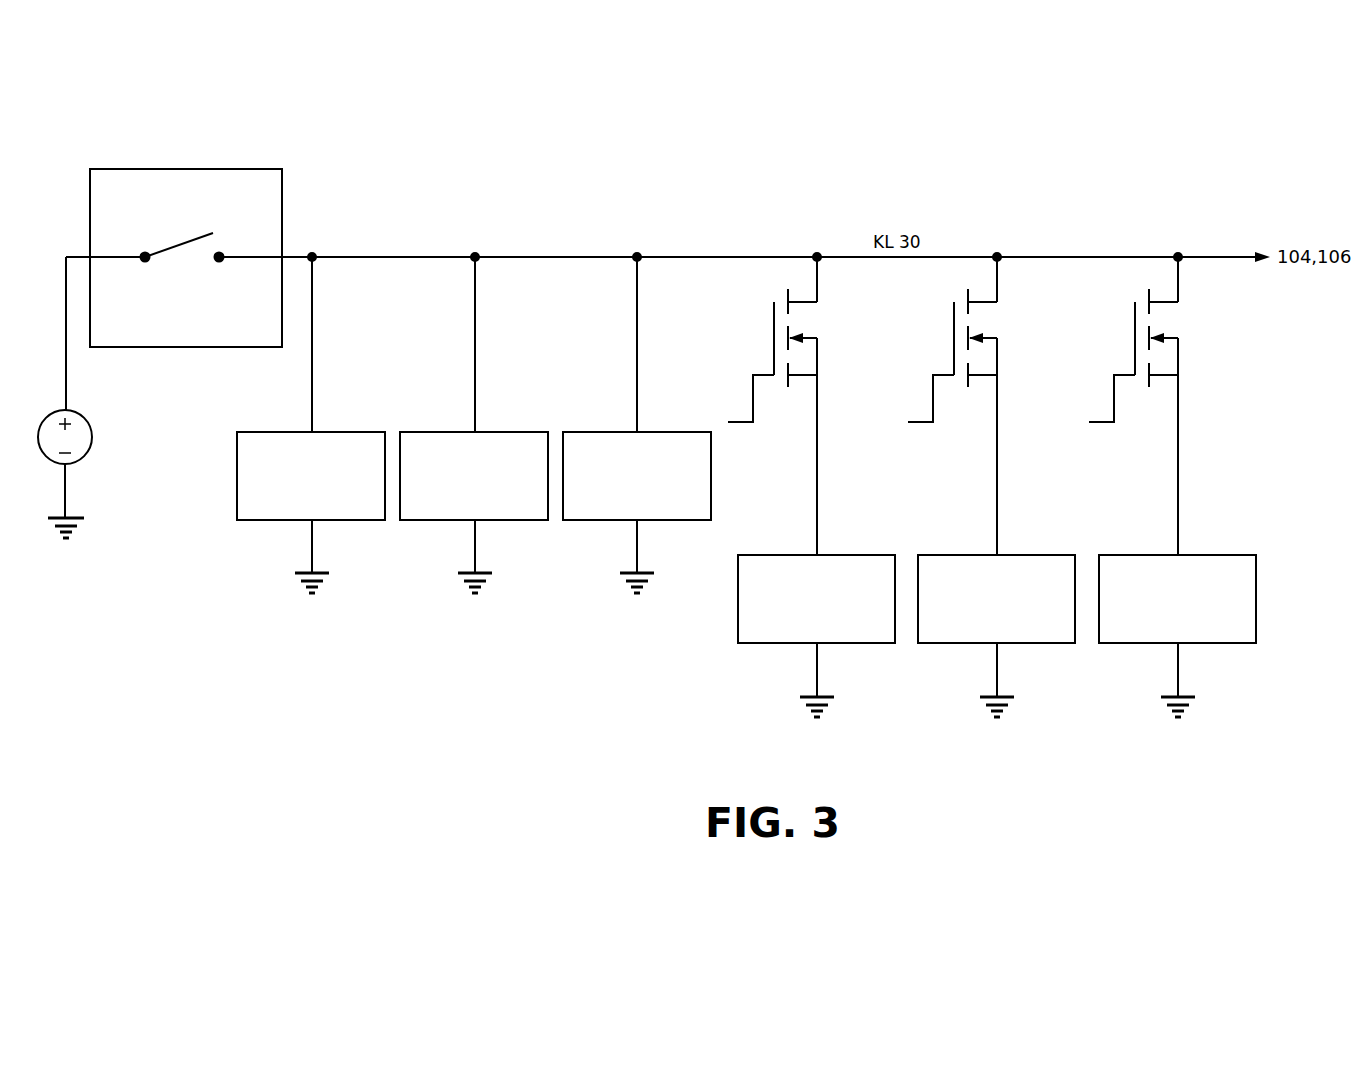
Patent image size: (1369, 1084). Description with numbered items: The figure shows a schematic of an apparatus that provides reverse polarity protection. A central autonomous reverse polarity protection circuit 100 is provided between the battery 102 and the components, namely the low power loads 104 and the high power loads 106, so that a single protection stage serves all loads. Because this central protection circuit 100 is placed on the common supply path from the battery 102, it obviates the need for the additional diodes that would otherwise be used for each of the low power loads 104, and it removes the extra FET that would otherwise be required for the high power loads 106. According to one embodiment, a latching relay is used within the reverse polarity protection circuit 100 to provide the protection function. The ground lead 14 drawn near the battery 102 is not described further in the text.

The central autonomous reverse polarity protection circuit 100 is at (282, 210).
The battery 102 is at (87, 455).
The battery ground line 14 is at (72, 501).
The low power loads 104 is at (272, 520).
The high power loads 106 is at (777, 643).